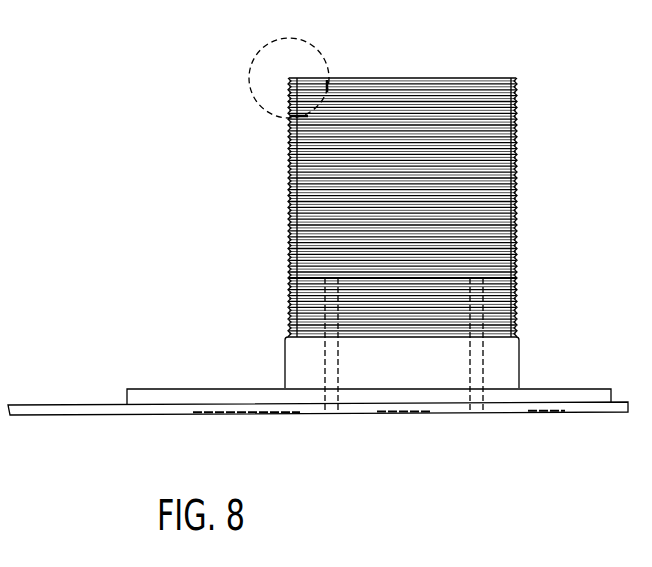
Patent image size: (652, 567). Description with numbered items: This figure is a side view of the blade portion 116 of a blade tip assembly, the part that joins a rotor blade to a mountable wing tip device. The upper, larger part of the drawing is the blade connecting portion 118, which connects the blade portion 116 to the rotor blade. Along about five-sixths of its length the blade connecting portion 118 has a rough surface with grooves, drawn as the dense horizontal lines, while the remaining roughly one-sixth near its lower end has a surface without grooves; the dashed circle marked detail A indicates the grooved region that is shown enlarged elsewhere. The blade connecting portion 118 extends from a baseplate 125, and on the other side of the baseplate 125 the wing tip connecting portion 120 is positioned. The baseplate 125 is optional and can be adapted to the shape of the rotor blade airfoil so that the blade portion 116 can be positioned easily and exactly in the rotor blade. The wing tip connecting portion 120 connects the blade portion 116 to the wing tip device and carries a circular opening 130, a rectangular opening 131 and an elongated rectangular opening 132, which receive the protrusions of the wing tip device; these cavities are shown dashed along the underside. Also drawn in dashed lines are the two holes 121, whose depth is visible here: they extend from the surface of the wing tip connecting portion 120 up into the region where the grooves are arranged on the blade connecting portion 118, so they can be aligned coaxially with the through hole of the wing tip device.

The blade portion 116 is at (553, 178).
The blade connecting portion 118 is at (510, 355).
The wing tip connecting portion 120 is at (70, 410).
The holes 121 is at (325, 417).
The baseplate 125 is at (162, 393).
The circular opening 130 is at (548, 415).
The rectangular opening 131 is at (402, 417).
The elongated rectangular opening 132 is at (255, 417).
The detail A is at (311, 41).